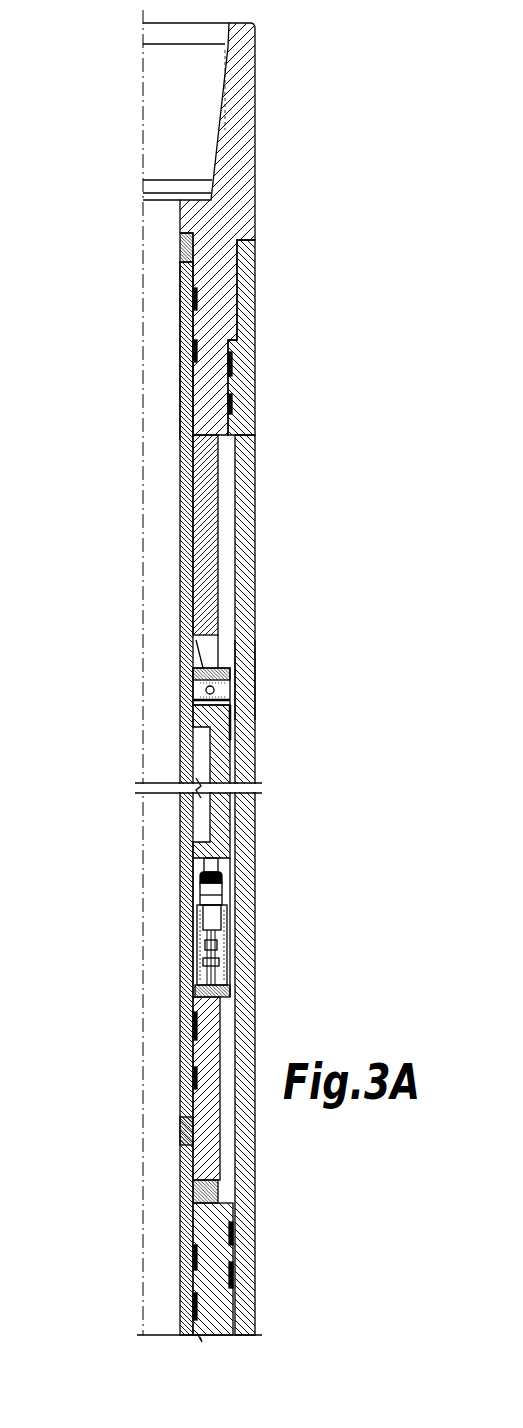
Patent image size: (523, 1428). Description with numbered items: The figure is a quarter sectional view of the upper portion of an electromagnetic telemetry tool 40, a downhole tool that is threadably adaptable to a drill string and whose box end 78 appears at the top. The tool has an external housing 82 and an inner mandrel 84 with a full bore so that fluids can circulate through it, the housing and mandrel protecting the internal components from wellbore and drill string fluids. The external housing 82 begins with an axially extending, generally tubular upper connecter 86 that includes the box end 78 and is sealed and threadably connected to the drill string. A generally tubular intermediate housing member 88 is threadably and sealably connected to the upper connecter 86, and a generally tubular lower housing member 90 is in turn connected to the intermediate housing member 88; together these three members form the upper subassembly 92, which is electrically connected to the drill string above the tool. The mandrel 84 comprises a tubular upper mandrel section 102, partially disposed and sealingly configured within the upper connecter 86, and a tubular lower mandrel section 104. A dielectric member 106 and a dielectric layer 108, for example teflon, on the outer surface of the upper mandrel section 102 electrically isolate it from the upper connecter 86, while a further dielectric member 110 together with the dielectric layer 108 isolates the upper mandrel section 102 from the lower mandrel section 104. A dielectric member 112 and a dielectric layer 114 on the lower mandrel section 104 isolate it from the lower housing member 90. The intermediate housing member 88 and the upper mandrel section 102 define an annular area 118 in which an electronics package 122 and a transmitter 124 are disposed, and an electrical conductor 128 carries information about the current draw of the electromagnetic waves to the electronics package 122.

The electromagnetic telemetry tool 40 is at (287, 126).
The box end 78 is at (220, 37).
The external housing 82 is at (262, 315).
The mandrel 84 is at (176, 520).
The upper connecter 86 is at (244, 193).
The intermediate housing member 88 is at (248, 501).
The lower housing member 90 is at (228, 1320).
The upper subassembly 92 is at (263, 664).
The upper mandrel section 102 is at (181, 374).
The lower mandrel section 104 is at (183, 1225).
The dielectric member 106 is at (181, 247).
The dielectric layer 108 is at (192, 419).
The dielectric member 110 is at (181, 1133).
The dielectric member 112 is at (196, 1192).
The dielectric layer 114 is at (192, 1287).
The annular area 118 is at (213, 638).
The electronics package 122 is at (220, 838).
The transmitter 124 is at (208, 548).
The electrical conductor 128 is at (208, 653).